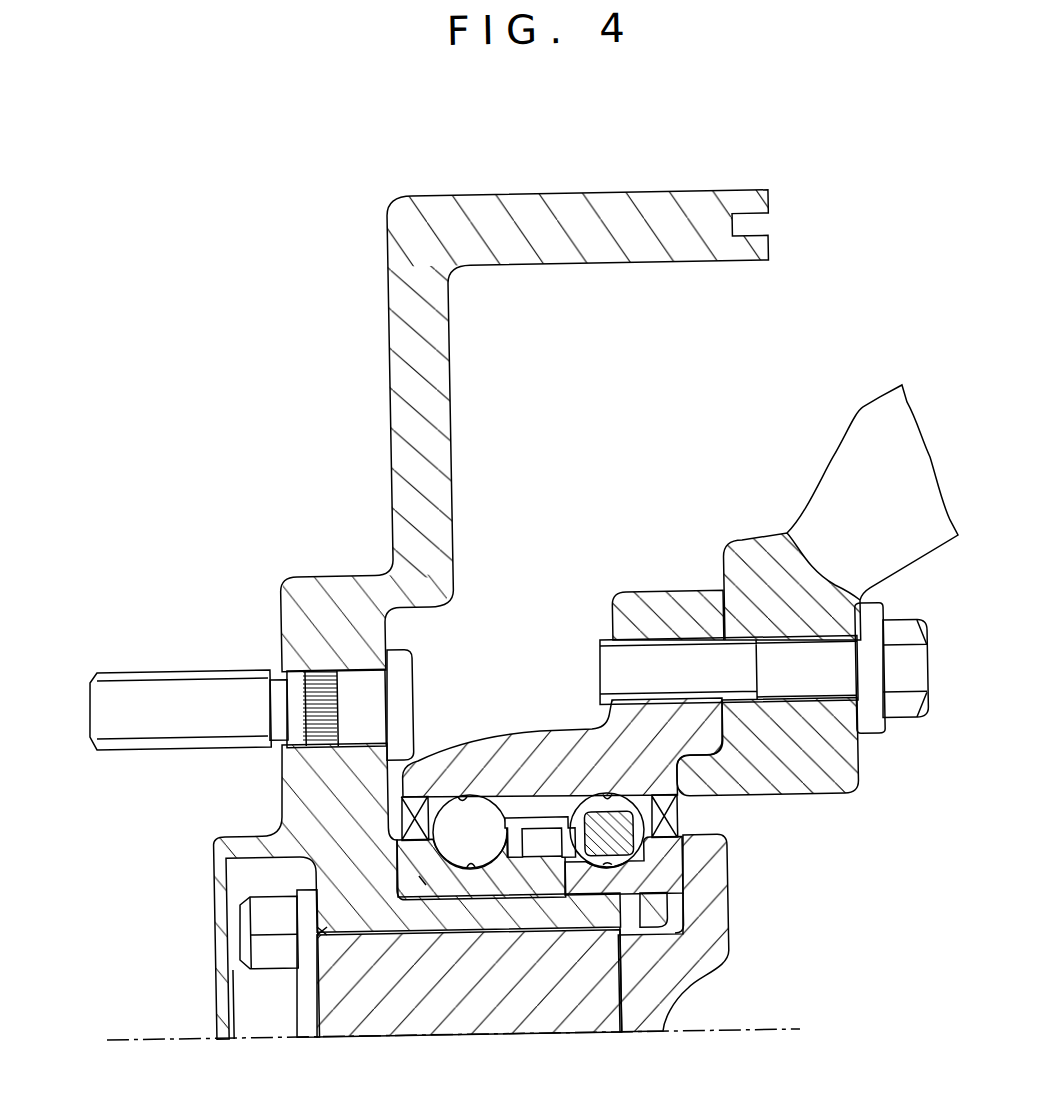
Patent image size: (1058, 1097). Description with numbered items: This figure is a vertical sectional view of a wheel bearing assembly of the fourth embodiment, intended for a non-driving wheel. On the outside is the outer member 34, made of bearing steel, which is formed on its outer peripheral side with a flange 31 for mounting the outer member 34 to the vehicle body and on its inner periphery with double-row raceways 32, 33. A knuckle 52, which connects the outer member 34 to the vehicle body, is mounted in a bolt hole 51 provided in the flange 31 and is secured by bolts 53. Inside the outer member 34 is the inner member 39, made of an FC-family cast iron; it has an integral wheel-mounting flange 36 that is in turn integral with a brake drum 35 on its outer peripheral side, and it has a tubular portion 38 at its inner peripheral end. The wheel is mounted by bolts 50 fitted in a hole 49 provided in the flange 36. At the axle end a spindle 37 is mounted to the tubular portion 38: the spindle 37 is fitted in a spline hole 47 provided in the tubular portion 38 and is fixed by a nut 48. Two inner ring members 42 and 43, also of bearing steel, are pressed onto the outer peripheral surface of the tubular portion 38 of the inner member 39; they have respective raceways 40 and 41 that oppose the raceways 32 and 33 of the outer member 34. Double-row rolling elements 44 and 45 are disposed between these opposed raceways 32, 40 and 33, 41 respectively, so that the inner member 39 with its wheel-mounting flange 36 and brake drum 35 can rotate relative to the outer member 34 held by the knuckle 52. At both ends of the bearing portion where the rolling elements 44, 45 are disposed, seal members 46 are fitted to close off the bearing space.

The flange 31 is at (615, 634).
The raceway 32 is at (452, 804).
The raceway 33 is at (607, 798).
The outer member 34 is at (701, 589).
The brake drum 35 is at (632, 207).
The wheel-mounting flange 36 is at (290, 616).
The spindle 37 is at (730, 906).
The tubular portion 38 is at (560, 914).
The inner member 39 is at (272, 810).
The raceway 40 is at (465, 894).
The raceway 41 is at (604, 934).
The inner ring member 42 is at (418, 878).
The inner ring member 43 is at (662, 882).
The rolling elements 44 is at (485, 801).
The rolling elements 45 is at (580, 811).
The seal members 46 is at (400, 816).
The spline hole 47 is at (500, 936).
The nut 48 is at (243, 1017).
The hole 49 is at (347, 662).
The bolts 50 is at (148, 693).
The bolt hole 51 is at (634, 647).
The knuckle 52 is at (855, 451).
The bolts 53 is at (905, 715).